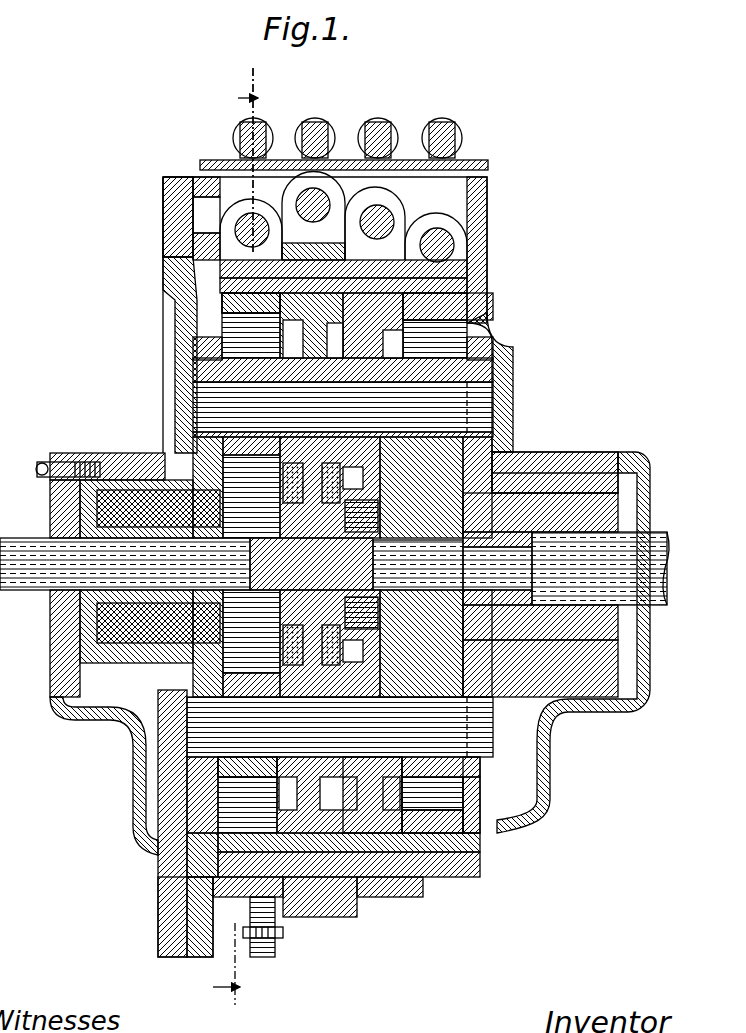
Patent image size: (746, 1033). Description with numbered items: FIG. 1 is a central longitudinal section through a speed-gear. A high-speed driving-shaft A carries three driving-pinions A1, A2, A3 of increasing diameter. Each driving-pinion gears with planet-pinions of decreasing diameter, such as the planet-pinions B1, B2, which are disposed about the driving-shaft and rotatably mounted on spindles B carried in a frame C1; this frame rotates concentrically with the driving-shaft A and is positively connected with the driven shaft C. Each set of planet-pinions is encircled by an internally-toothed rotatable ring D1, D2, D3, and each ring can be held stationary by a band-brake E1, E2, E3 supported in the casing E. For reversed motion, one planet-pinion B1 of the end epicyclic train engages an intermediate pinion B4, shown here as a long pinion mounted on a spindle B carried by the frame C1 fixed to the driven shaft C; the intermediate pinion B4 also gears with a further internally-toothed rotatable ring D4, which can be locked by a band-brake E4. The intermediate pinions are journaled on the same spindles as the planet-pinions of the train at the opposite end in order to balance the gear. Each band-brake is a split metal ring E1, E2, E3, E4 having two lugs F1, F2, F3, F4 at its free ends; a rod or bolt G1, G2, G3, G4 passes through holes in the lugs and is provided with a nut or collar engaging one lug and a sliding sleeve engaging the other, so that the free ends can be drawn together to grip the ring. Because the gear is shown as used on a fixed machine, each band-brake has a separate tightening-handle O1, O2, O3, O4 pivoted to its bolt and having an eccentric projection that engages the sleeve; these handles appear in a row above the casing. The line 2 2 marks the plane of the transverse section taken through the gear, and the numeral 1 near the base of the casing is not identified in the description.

The driving-shaft A is at (15, 556).
The driving-pinion A1 is at (420, 441).
The driving-pinion A2 is at (463, 480).
The driving-pinion A3 is at (470, 468).
The spindles B is at (470, 400).
The planet-pinion B1 is at (397, 307).
The planet-pinion B2 is at (440, 318).
The intermediate pinion B4 is at (173, 440).
The driven shaft C is at (612, 575).
The frame C1 is at (467, 368).
The internally-toothed rotatable ring D1 is at (313, 867).
The internally-toothed rotatable ring D2 is at (390, 847).
The internally-toothed rotatable ring D3 is at (463, 800).
The internally-toothed rotatable ring D4 is at (247, 293).
The casing E is at (183, 313).
The band-brake E1 is at (490, 185).
The band-brake E2 is at (400, 262).
The band-brake E3 is at (437, 288).
The band-brake E4 is at (187, 253).
The lug F1 is at (247, 150).
The lug F2 is at (392, 195).
The lug F3 is at (430, 217).
The lug F4 is at (248, 188).
The rod G1 is at (305, 200).
The rod G2 is at (377, 213).
The rod G3 is at (437, 240).
The rod G4 is at (247, 217).
The tightening-handle O1 is at (314, 127).
The tightening-handle O2 is at (383, 127).
The tightening-handle O3 is at (444, 127).
The tightening-handle O4 is at (242, 146).
The base foot 1 is at (203, 953).
The section line 2 is at (235, 541).